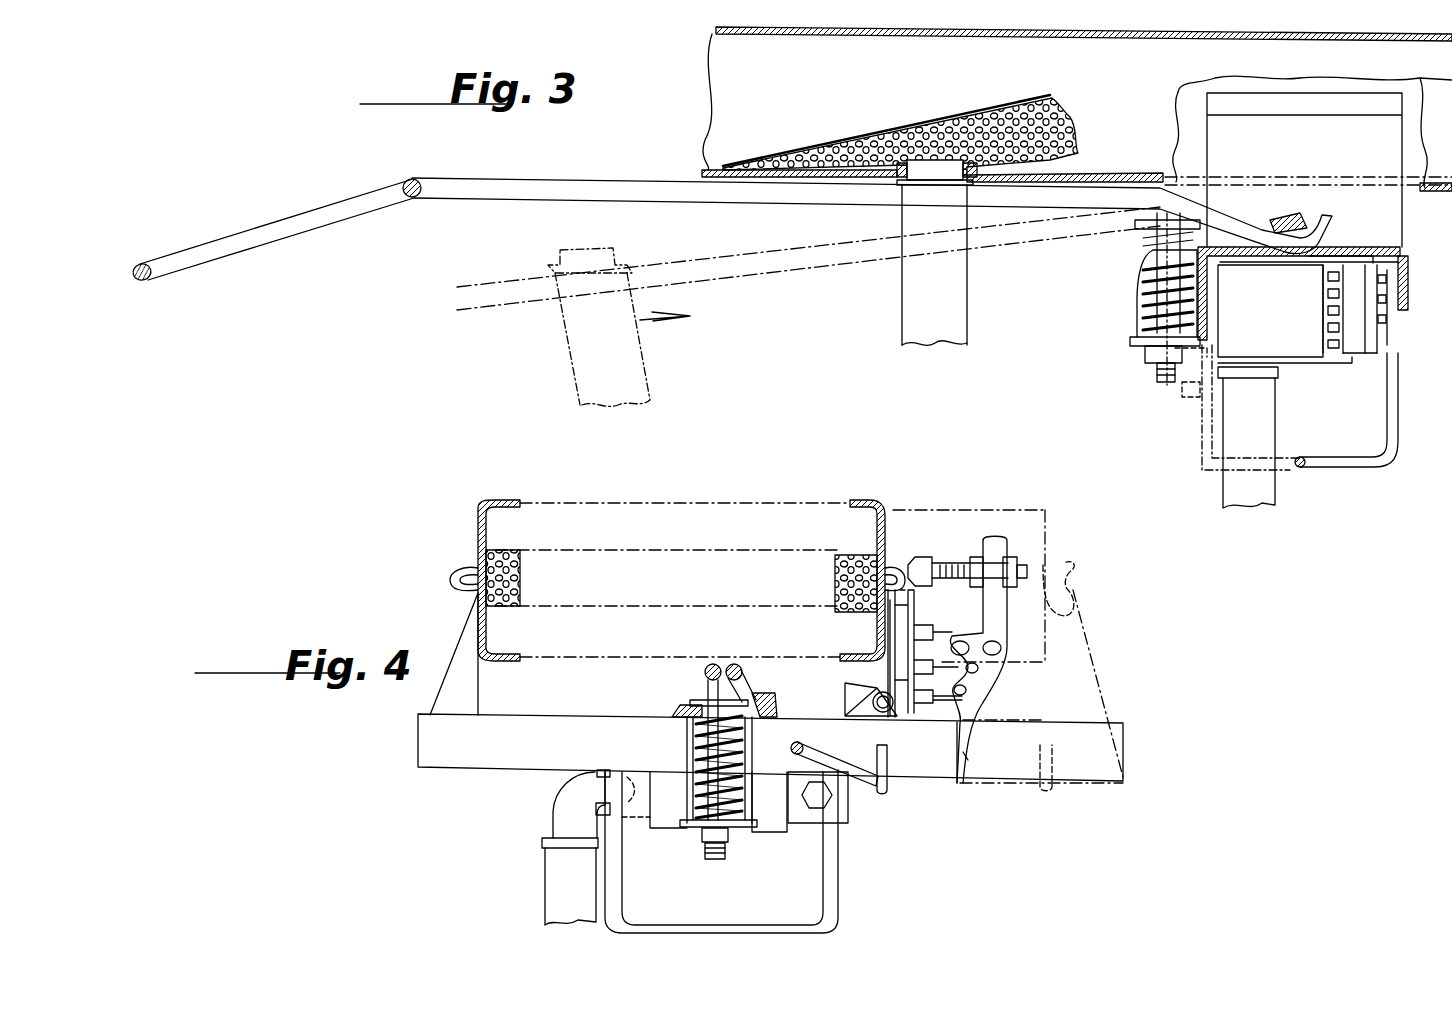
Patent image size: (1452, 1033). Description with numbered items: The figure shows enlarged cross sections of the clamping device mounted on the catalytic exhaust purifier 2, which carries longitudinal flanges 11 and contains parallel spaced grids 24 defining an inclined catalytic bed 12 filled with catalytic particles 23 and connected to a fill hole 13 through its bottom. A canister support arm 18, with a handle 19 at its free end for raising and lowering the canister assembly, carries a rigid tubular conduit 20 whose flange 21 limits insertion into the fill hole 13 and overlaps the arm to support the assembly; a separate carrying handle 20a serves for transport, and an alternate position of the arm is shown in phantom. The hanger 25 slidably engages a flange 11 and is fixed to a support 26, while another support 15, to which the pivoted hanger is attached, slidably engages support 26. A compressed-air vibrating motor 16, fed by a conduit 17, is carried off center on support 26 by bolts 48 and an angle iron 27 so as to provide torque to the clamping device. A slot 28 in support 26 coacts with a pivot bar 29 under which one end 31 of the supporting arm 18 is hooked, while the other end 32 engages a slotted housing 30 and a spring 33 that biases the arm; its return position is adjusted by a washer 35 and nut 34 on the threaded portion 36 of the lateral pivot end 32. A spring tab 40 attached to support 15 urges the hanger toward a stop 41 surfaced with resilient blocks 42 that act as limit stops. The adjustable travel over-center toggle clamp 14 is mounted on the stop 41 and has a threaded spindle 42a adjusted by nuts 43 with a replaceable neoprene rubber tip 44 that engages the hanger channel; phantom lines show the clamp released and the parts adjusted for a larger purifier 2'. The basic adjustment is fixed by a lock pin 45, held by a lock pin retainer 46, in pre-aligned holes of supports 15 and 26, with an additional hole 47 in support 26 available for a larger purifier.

In FIG. 3, the catalytic exhaust purifier 2 is at (1059, 23).
In FIG. 4, the catalytic exhaust purifier 2 is at (651, 561).
In FIG. 4, the vehicle body wall (phantom) 2' is at (942, 479).
In FIG. 4, the longitudinally extending flanges 11 is at (462, 573).
In FIG. 3, the inclined catalytic bed 12 is at (1059, 93).
In FIG. 4, the inclined catalytic bed 12 is at (651, 561).
In FIG. 3, the fill hole 13 is at (991, 190).
In FIG. 4, the fill hole 13 is at (877, 668).
In FIG. 4, the adjustable travel over-center toggle clamp 14 is at (988, 702).
In FIG. 4, the support 15 is at (932, 770).
In FIG. 3, the vibrating motor 16 is at (1310, 350).
In FIG. 4, the vibrating motor 16 is at (782, 832).
In FIG. 3, the conduit 17 is at (1247, 492).
In FIG. 4, the conduit 17 is at (558, 882).
In FIG. 3, the canister support arm 18 is at (731, 249).
In FIG. 3, the handle 19 is at (291, 230).
In FIG. 3, the rigid tubular conduit 20 is at (915, 310).
In FIG. 3, the second handle 20a is at (1353, 470).
In FIG. 3, the flange 21 is at (880, 188).
In FIG. 3, the catalytic particles 23 is at (918, 115).
In FIG. 4, the catalytic particles 23 is at (681, 578).
In FIG. 3, the grids 24 is at (1081, 157).
In FIG. 4, the grids 24 is at (500, 553).
In FIG. 3, the hanger 25 is at (1232, 136).
In FIG. 4, the hanger 25 is at (442, 688).
In FIG. 3, the support 26 is at (1402, 253).
In FIG. 4, the support 26 is at (482, 758).
In FIG. 3, the angle iron 27 is at (1370, 342).
In FIG. 3, the slot 28 is at (1293, 258).
In FIG. 3, the pivot bar 29 is at (1285, 220).
In FIG. 4, the pivot bar 29 is at (777, 714).
In FIG. 3, the slotted housing 30 is at (1126, 319).
In FIG. 4, the slotted housing 30 is at (725, 787).
In FIG. 3, the end of supporting arm 31 is at (1222, 212).
In FIG. 4, the end of supporting arm 31 is at (746, 680).
In FIG. 3, the lateral-pivot-end 32 is at (1143, 286).
In FIG. 4, the lateral-pivot-end 32 is at (712, 690).
In FIG. 3, the spring 33 is at (1140, 262).
In FIG. 4, the spring 33 is at (693, 822).
In FIG. 3, the nut 34 is at (1145, 355).
In FIG. 4, the nut 34 is at (728, 845).
In FIG. 3, the washer 35 is at (1135, 342).
In FIG. 4, the washer 35 is at (752, 828).
In FIG. 3, the threaded portion 36 is at (1162, 380).
In FIG. 4, the threaded portion 36 is at (716, 861).
In FIG. 4, the spring tab 40 is at (866, 708).
In FIG. 4, the stop 41 is at (930, 640).
In FIG. 4, the resilient blocks 42 is at (914, 626).
In FIG. 4, the threaded spindle 42a is at (1003, 528).
In FIG. 4, the nuts 43 is at (1015, 565).
In FIG. 4, the neoprene rubber tip 44 is at (920, 555).
In FIG. 4, the lock pin 45 is at (866, 780).
In FIG. 4, the lock pin retainer 46 is at (880, 752).
In FIG. 4, the additional hole 47 is at (963, 752).
In FIG. 3, the bolts 48 is at (1385, 322).